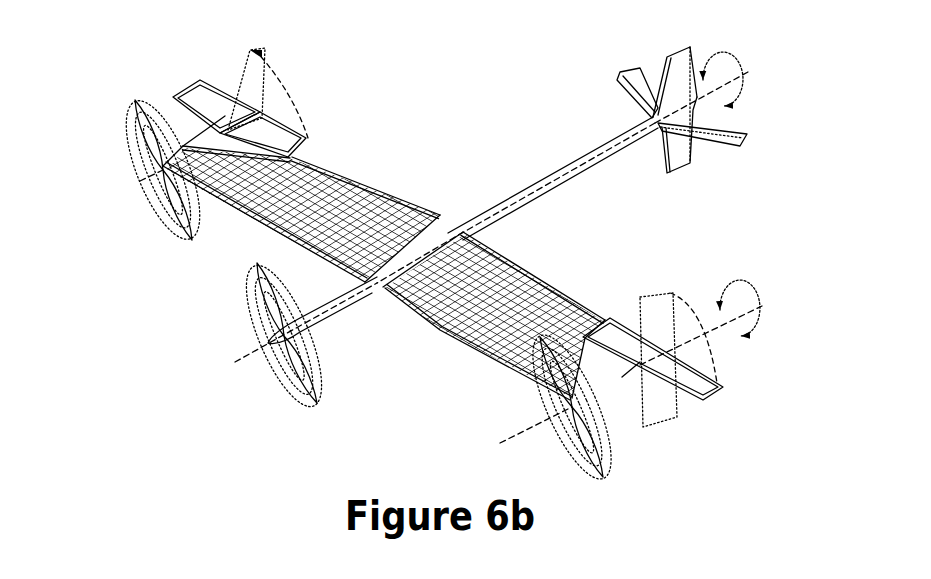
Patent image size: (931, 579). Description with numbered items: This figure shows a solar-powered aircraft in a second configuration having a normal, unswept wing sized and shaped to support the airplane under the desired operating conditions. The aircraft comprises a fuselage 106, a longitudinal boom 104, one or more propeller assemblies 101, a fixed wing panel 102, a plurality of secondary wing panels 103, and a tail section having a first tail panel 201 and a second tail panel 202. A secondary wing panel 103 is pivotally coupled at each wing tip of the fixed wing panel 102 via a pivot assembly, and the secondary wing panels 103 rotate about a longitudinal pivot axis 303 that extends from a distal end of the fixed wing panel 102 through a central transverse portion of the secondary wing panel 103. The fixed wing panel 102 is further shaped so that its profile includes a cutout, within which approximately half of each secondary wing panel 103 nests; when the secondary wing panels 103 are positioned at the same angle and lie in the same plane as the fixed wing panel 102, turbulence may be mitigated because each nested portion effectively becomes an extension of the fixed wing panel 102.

The propeller assembly 101 is at (118, 148).
The fixed wing panel 102 is at (445, 330).
The secondary wing panel 103 is at (304, 133).
The longitudinal boom 104 is at (548, 197).
The fuselage 106 is at (330, 293).
The first tail panel 201 is at (692, 44).
The second tail panel 202 is at (748, 136).
The longitudinal pivot axis 303 is at (748, 78).